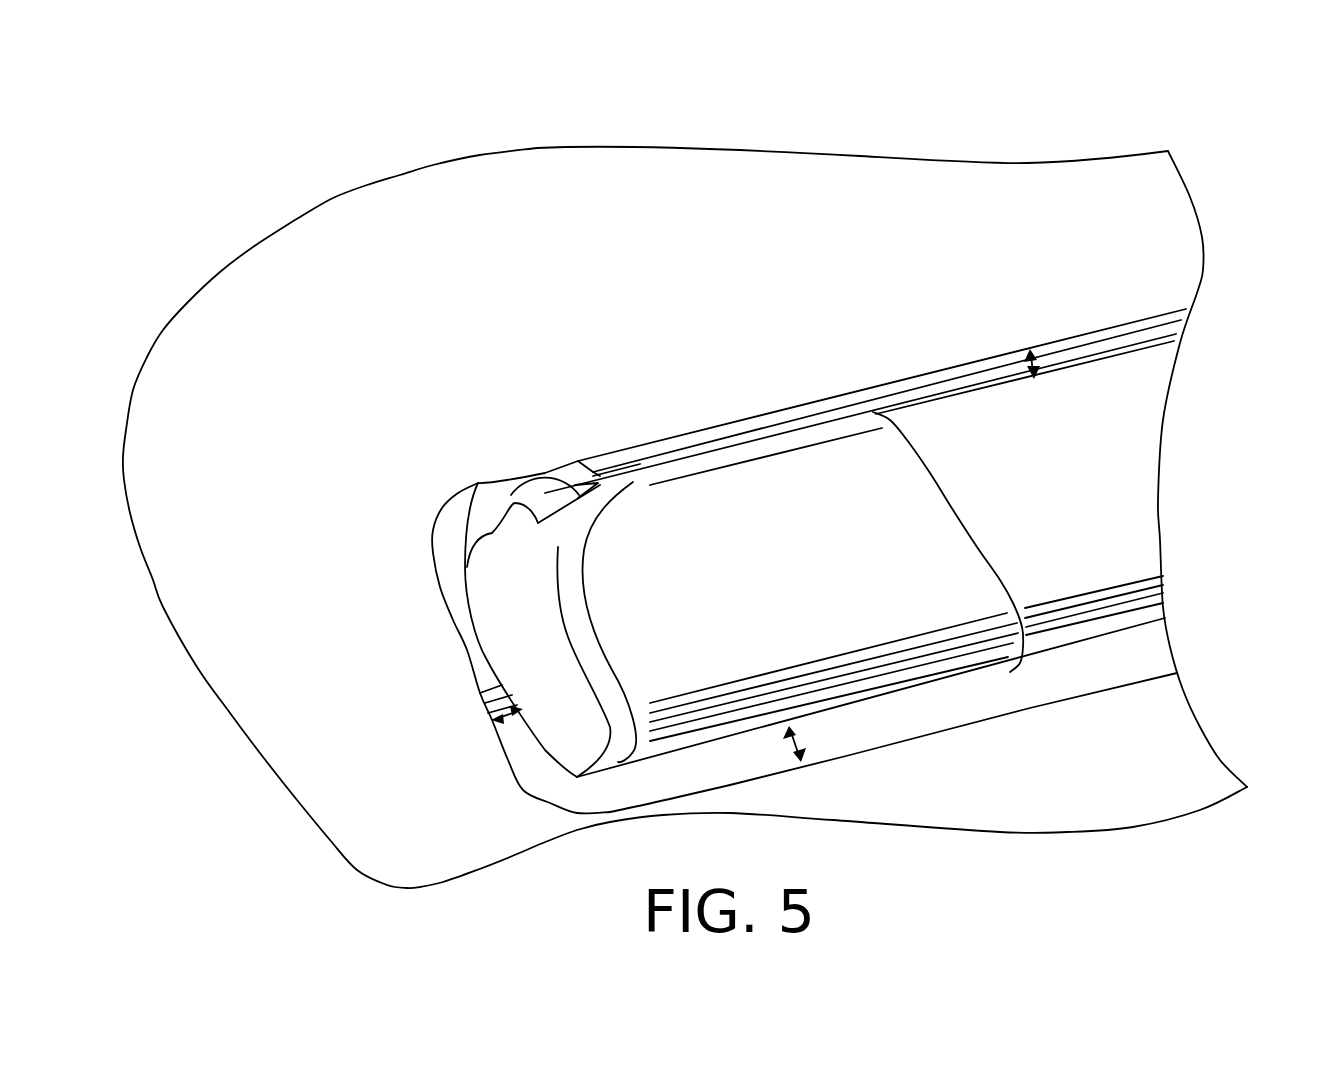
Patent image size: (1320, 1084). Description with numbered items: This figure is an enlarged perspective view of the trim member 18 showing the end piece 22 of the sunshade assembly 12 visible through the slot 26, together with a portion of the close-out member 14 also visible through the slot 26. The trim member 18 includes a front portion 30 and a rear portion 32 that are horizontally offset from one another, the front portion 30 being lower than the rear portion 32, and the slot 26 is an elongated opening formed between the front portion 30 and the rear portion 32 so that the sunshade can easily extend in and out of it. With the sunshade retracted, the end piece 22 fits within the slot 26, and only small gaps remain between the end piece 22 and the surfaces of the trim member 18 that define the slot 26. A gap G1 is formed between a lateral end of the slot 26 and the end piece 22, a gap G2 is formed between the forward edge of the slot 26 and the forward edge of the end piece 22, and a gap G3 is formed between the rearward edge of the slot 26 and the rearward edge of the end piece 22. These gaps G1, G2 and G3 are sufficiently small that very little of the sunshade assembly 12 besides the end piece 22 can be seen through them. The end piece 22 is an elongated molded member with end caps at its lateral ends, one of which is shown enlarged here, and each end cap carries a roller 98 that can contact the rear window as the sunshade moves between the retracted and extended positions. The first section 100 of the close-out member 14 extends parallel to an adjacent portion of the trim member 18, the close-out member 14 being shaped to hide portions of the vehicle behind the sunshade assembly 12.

The sunshade assembly 12 is at (1203, 387).
The close-out member 14 is at (679, 449).
The trim member 18 is at (350, 165).
The end piece 22 is at (1080, 483).
The slot 26 is at (850, 748).
The front portion 30 is at (1062, 798).
The rear portion 32 is at (958, 203).
The roller 98 is at (533, 498).
The first section 100 is at (603, 463).
The gap G1 is at (507, 720).
The gap G2 is at (790, 745).
The gap G3 is at (1038, 363).